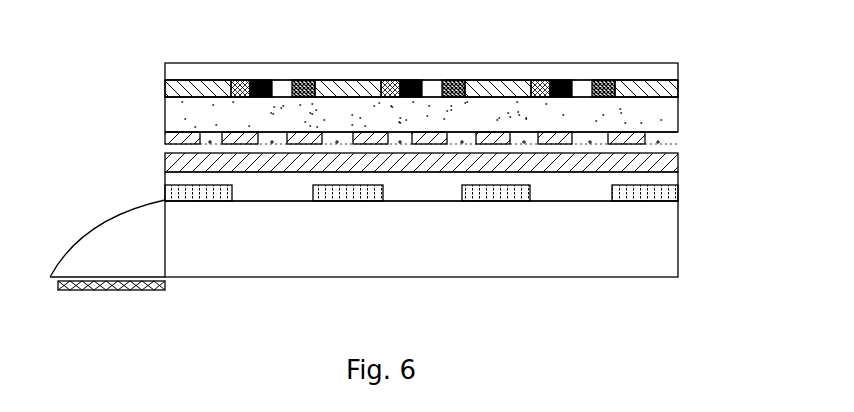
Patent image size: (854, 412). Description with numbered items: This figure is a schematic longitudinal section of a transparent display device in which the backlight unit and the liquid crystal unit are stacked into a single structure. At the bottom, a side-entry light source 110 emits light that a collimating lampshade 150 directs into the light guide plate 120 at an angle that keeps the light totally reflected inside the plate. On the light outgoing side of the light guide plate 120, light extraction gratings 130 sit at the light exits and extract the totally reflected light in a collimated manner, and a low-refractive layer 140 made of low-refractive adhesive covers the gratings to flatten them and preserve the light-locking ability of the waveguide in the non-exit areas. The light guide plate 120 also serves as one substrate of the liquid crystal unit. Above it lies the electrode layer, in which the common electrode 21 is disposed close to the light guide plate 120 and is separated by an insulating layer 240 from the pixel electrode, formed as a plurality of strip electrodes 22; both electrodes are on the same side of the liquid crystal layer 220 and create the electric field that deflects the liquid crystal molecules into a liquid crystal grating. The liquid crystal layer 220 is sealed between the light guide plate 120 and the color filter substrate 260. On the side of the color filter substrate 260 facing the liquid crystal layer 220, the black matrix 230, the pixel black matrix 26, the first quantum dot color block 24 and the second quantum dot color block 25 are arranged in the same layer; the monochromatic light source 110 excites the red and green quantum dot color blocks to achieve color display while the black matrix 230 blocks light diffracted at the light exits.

The second quantum dot color block 25 is at (240, 82).
The pixel black matrix 26 is at (263, 81).
The first quantum dot color block 24 is at (307, 81).
The black matrix 230 is at (352, 82).
The color filter substrate 260 is at (678, 75).
The liquid crystal layer 220 is at (678, 110).
The strip electrodes 22 is at (165, 130).
The insulating layer 240 is at (678, 147).
The common electrode 21 is at (165, 155).
The low-refractive layer 140 is at (678, 183).
The light extraction grating 130 is at (165, 193).
The collimating lampshade 150 is at (78, 241).
The light guide plate 120 is at (364, 239).
The light source 110 is at (107, 290).